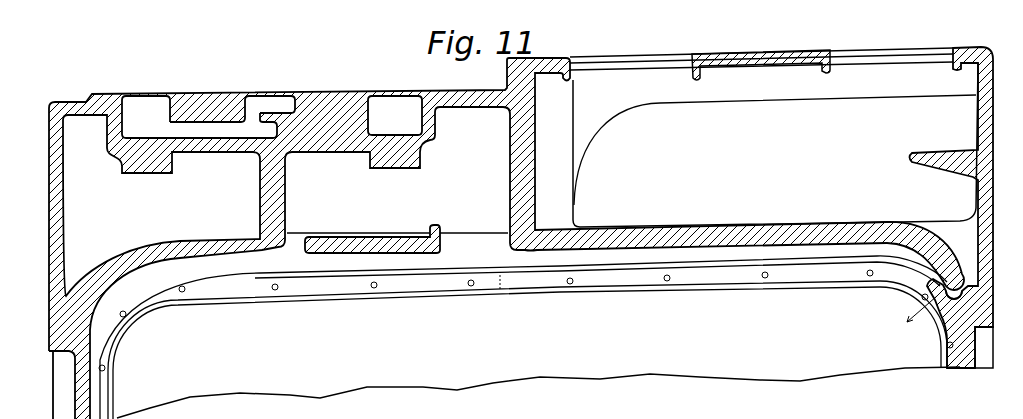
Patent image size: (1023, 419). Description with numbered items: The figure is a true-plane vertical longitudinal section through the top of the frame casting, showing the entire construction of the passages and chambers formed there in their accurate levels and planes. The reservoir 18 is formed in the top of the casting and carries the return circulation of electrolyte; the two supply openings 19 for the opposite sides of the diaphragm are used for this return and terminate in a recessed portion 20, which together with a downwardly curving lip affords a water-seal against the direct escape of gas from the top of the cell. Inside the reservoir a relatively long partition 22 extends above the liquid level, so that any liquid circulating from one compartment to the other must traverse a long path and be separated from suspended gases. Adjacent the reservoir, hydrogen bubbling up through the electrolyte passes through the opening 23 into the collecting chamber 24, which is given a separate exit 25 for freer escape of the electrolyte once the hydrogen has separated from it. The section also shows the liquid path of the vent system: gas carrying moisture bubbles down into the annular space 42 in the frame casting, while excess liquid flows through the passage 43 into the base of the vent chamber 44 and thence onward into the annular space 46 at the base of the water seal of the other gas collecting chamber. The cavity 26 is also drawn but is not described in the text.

The reservoir 18 is at (761, 73).
The supply opening 19 is at (928, 256).
The recessed portion 20 is at (965, 292).
The partition 22 is at (775, 145).
The opening 23 is at (389, 239).
The collecting chamber 24 is at (394, 177).
The exit 25 is at (523, 337).
The left chamber 26 is at (161, 205).
The annular space 42 is at (146, 117).
The passage 43 is at (223, 127).
The vent chamber 44 is at (270, 104).
The annular space 46 is at (395, 114).